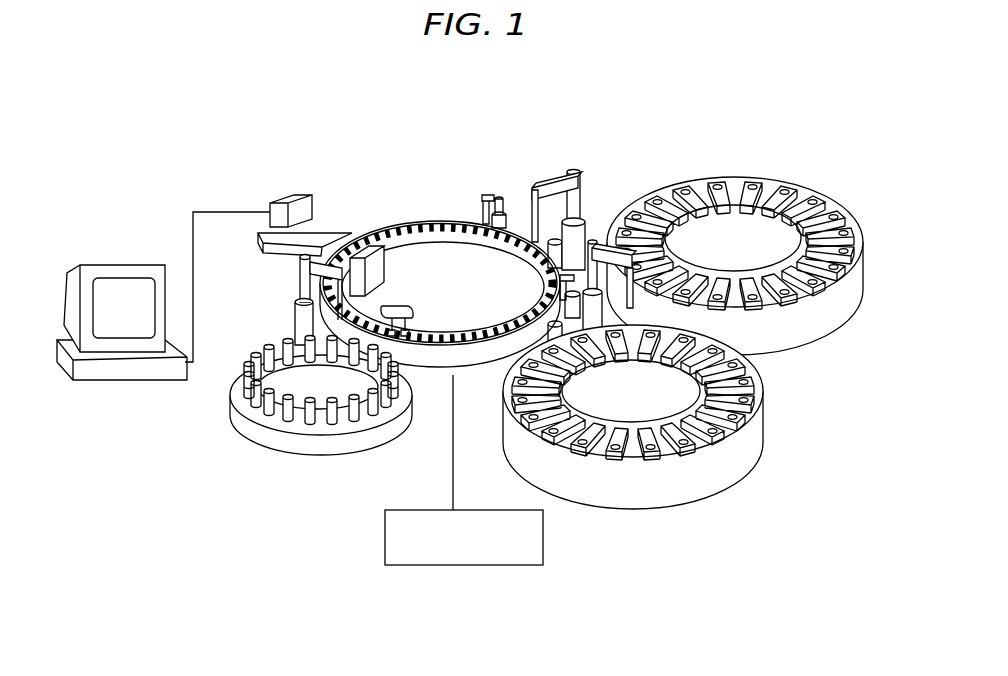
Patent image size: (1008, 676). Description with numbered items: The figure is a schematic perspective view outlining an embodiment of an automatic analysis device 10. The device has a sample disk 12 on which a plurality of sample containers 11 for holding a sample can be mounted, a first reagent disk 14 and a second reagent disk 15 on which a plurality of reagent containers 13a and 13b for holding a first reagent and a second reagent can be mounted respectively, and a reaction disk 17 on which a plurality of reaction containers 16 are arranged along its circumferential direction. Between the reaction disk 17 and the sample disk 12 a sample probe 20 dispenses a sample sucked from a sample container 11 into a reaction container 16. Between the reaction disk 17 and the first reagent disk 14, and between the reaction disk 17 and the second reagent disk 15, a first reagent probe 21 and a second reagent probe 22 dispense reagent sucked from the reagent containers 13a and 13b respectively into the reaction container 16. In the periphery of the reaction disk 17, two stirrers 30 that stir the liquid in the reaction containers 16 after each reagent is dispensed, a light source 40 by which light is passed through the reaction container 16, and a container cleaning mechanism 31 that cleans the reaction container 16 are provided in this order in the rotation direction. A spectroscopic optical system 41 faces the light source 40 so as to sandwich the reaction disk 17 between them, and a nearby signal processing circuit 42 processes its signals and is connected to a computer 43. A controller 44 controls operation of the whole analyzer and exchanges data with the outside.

The automatic analysis device 10 is at (388, 142).
The sample containers 11 is at (280, 340).
The sample disk 12 is at (276, 438).
The reagent containers 13a is at (700, 190).
The reagent containers 13b is at (614, 440).
The first reagent disk 14 is at (838, 312).
The second reagent disk 15 is at (724, 470).
The reaction containers 16 is at (408, 226).
The reaction disk 17 is at (478, 358).
The sample probe 20 is at (300, 266).
The first reagent probe 21 is at (555, 180).
The second reagent probe 22 is at (590, 244).
The stirrers 30 is at (495, 214).
The container cleaning mechanism 31 is at (417, 322).
The light source 40 is at (373, 256).
The spectroscopic optical system 41 is at (332, 232).
The signal processing circuit 42 is at (289, 200).
The computer 43 is at (122, 268).
The controller 44 is at (385, 543).